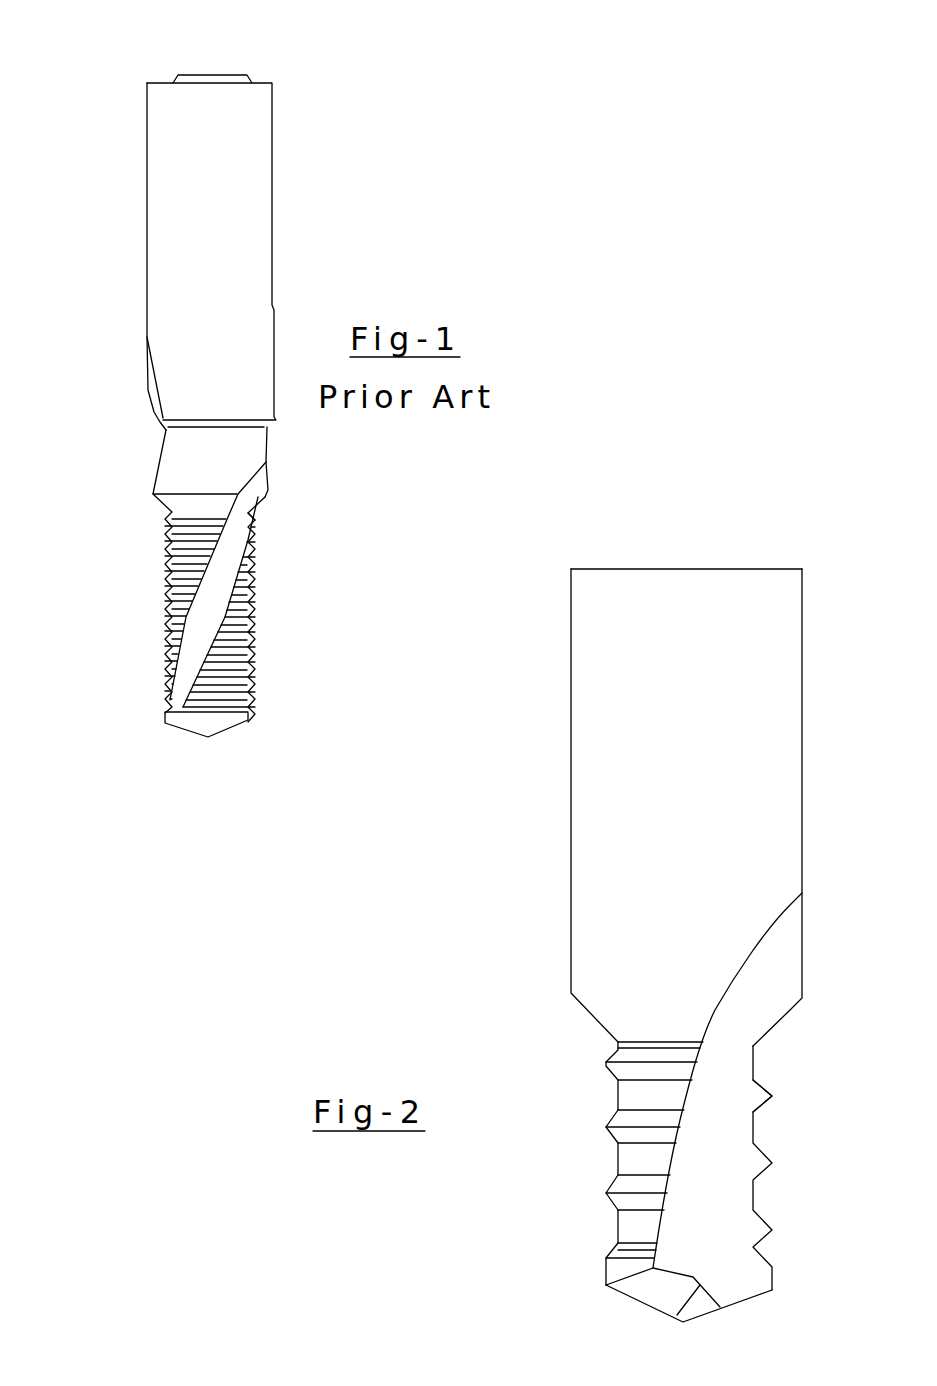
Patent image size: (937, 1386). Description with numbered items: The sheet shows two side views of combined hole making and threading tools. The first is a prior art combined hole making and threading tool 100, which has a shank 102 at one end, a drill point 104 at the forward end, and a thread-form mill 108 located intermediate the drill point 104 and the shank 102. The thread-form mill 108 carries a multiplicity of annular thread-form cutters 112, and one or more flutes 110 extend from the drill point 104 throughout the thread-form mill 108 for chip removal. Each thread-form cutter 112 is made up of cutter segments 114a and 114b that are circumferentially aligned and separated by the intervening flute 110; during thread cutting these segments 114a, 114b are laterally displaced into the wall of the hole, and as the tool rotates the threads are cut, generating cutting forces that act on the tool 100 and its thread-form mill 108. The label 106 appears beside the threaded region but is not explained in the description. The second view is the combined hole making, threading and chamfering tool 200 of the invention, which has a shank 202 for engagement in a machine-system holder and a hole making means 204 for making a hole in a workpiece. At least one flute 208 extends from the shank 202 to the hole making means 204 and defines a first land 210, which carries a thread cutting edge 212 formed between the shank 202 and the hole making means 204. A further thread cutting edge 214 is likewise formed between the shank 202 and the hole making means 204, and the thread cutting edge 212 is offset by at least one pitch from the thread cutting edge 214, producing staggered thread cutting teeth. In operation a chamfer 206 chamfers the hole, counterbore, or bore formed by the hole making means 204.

In FIG. 1, the prior art combined hole making and threading tool 100 is at (98, 135).
In FIG. 1, the shank 102 is at (253, 175).
In FIG. 1, the drill point 104 is at (232, 730).
In FIG. 1, the threaded portion 106 is at (264, 500).
In FIG. 1, the thread-form mill 108 is at (268, 612).
In FIG. 1, the flute 110 is at (234, 695).
In FIG. 1, the thread-form cutter 112 is at (257, 588).
In FIG. 1, the cutter segment 114a is at (250, 558).
In FIG. 1, the cutter segment 114b is at (208, 550).
In FIG. 2, the combined hole making and threading tool 200 is at (523, 851).
In FIG. 2, the shank 202 is at (802, 788).
In FIG. 2, the hole making means 204 is at (720, 1308).
In FIG. 2, the chamfer 206 is at (792, 1013).
In FIG. 2, the flute 208 is at (713, 1197).
In FIG. 2, the first land 210 is at (658, 1098).
In FIG. 2, the thread cutting edge 212 is at (605, 1193).
In FIG. 2, the thread cutting edge 214 is at (772, 1095).